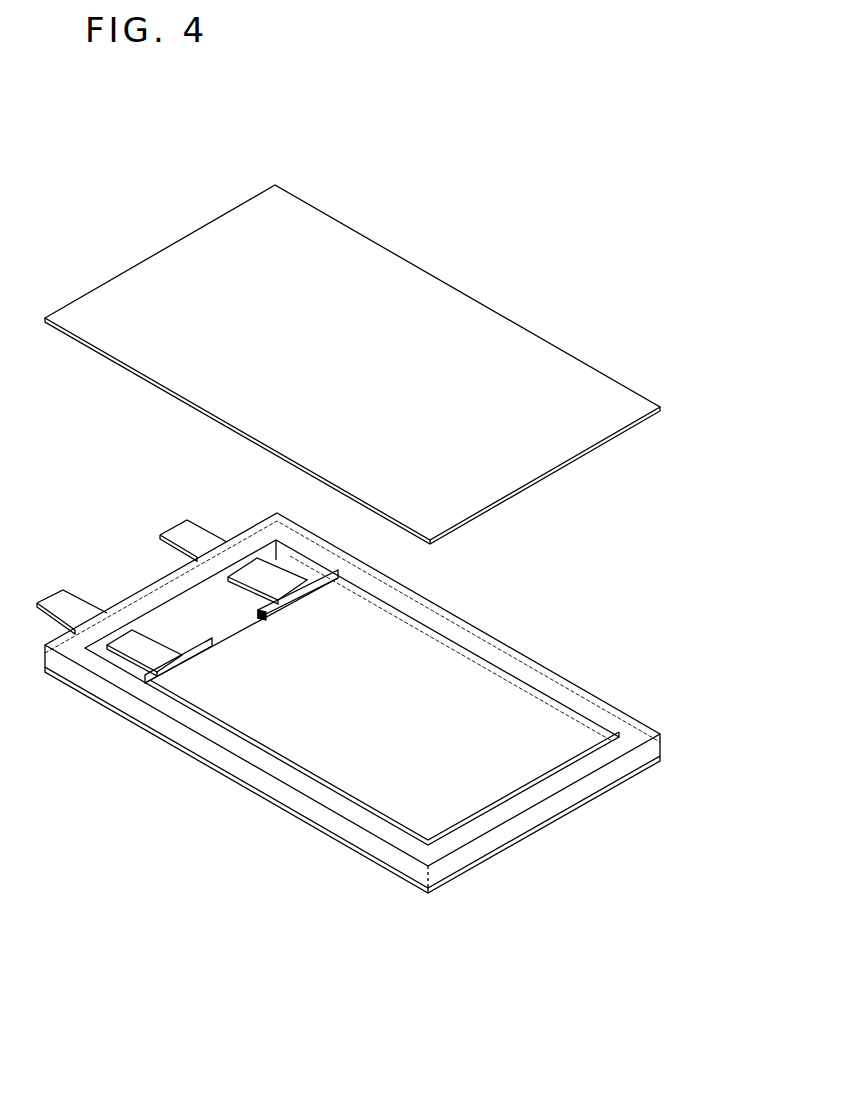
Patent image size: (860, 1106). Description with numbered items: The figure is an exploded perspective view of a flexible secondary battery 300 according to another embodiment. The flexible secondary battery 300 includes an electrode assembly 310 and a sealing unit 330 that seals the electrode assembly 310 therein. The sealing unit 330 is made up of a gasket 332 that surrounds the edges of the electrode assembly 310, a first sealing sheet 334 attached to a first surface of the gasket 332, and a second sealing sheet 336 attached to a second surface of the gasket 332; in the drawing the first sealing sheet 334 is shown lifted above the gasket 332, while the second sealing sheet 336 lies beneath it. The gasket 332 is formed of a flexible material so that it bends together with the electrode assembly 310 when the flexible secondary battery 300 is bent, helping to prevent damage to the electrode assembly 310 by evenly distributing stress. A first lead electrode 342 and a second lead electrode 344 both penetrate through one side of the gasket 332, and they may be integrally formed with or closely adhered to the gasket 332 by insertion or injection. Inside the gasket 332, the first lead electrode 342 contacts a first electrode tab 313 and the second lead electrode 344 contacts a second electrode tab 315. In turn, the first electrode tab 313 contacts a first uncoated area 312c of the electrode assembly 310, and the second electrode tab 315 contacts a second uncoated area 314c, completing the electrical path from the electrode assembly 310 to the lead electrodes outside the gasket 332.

The flexible secondary battery 300 is at (638, 321).
The electrode assembly 310 is at (494, 694).
The first uncoated area 312c is at (160, 680).
The first electrode tab 313 is at (150, 645).
The second uncoated area 314c is at (330, 578).
The second electrode tab 315 is at (288, 578).
The sealing unit 330 is at (722, 410).
The gasket 332 is at (633, 730).
The first sealing sheet 334 is at (660, 407).
The second sealing sheet 336 is at (660, 762).
The first lead electrode 342 is at (53, 598).
The second lead electrode 344 is at (178, 532).